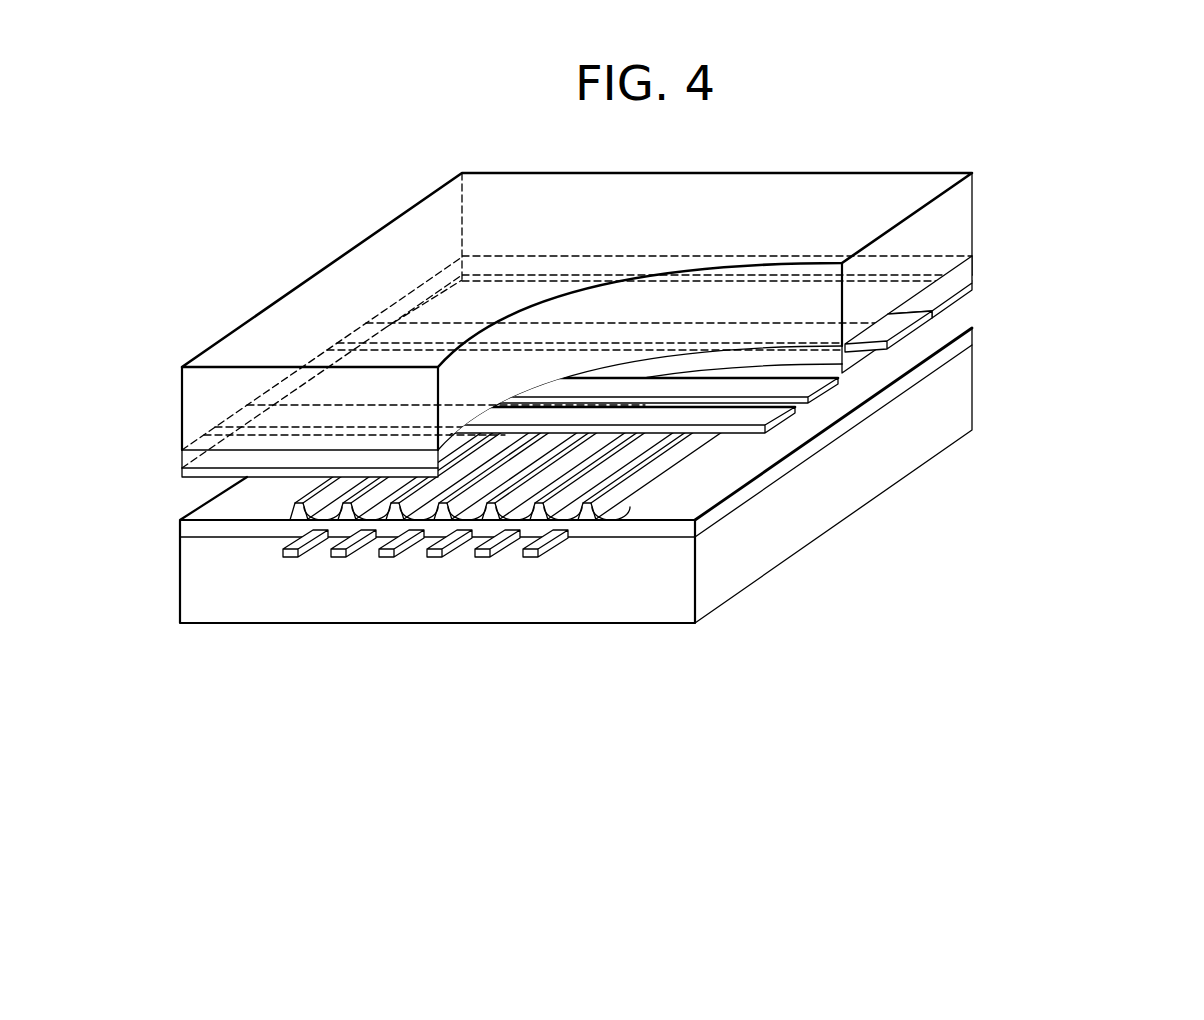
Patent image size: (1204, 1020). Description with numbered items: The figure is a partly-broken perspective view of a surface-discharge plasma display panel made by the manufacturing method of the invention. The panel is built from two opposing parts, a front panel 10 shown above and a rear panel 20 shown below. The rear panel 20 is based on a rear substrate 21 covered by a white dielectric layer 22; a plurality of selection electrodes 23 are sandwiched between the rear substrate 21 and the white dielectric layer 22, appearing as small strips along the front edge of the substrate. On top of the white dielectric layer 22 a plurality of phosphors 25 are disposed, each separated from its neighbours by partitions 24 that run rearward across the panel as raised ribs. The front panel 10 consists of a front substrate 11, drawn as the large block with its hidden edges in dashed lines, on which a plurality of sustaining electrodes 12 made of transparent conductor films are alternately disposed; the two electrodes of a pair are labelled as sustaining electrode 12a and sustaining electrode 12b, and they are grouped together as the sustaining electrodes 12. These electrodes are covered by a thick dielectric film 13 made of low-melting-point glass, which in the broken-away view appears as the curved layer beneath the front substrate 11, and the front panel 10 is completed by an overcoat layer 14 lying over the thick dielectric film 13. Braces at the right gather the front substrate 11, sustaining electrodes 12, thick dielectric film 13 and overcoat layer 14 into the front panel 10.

The front panel 10 is at (1125, 195).
The front substrate 11 is at (950, 233).
The sustaining electrodes 12 is at (1067, 282).
The sustaining electrode 12a is at (948, 308).
The sustaining electrode 12b is at (897, 337).
The thick dielectric film 13 is at (840, 347).
The overcoat layer 14 is at (842, 375).
The rear panel 20 is at (998, 540).
The rear substrate 21 is at (850, 472).
The white dielectric layer 22 is at (738, 500).
The selection electrodes 23 is at (290, 557).
The partitions 24 is at (392, 508).
The phosphors 25 is at (553, 531).